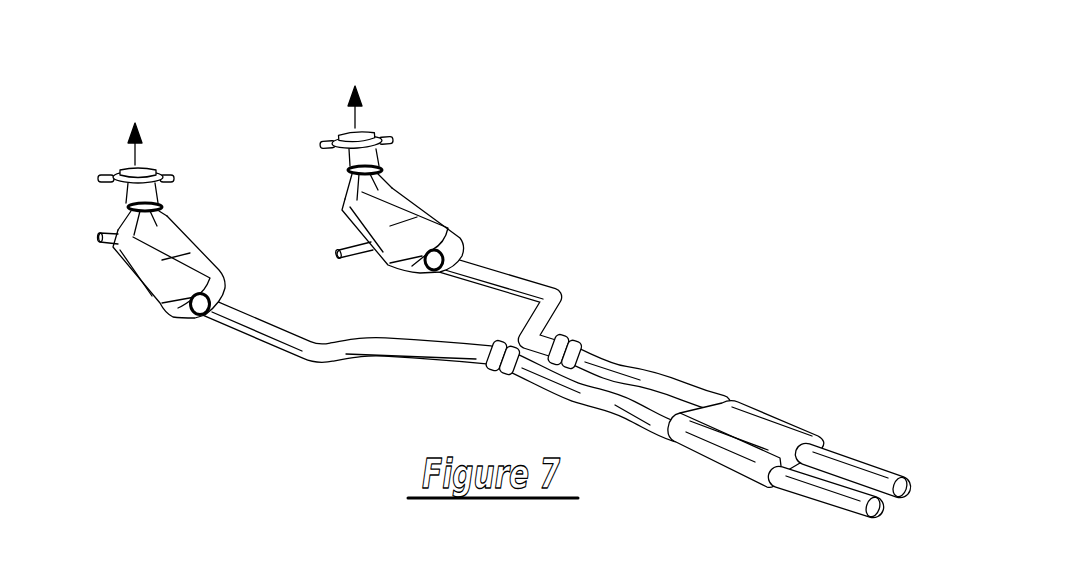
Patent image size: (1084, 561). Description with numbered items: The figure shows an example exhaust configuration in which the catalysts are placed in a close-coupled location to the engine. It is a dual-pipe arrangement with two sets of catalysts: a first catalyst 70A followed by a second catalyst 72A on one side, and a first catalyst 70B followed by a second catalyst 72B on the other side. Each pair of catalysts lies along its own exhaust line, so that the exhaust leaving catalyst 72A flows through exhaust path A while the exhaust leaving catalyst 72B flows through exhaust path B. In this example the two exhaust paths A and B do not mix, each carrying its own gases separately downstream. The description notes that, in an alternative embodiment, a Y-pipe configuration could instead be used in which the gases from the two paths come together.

The catalyst 70A is at (173, 243).
The catalyst 72A is at (192, 276).
The catalyst 70B is at (402, 203).
The catalyst 72B is at (425, 231).
The exhaust path A is at (272, 356).
The exhaust path B is at (540, 271).